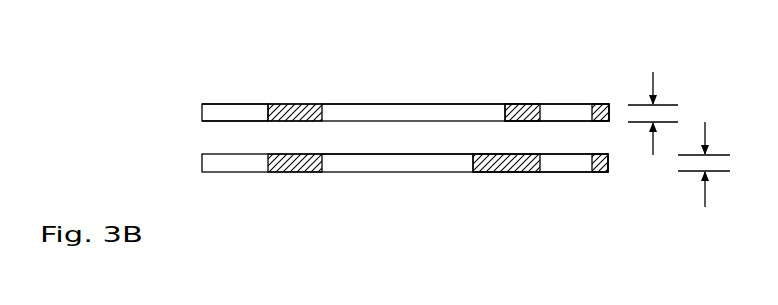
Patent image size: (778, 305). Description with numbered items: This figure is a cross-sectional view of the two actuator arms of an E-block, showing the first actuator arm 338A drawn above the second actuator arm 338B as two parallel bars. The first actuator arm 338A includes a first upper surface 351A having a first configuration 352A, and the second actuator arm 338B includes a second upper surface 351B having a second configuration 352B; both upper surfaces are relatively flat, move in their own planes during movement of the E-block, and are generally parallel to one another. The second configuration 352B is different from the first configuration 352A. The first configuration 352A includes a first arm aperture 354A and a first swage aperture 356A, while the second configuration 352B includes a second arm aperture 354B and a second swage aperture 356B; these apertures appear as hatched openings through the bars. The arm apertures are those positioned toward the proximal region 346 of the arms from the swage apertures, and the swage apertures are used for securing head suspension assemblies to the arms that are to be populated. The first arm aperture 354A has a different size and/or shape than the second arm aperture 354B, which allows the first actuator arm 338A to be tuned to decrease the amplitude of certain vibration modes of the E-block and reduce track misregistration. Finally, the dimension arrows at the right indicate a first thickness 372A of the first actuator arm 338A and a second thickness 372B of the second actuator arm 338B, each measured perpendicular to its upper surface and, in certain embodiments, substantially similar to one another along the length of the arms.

The first actuator arm 338A is at (201, 115).
The second actuator arm 338B is at (201, 163).
The proximal region 346 is at (240, 110).
The first upper surface 351A is at (336, 102).
The second upper surface 351B is at (358, 151).
The first configuration 352A is at (478, 12).
The first arm aperture 354A is at (492, 103).
The first swage aperture 356A is at (575, 103).
The second configuration 352B is at (542, 218).
The second arm aperture 354B is at (413, 173).
The second swage aperture 356B is at (560, 173).
The first thickness 372A is at (655, 101).
The second thickness 372B is at (705, 179).